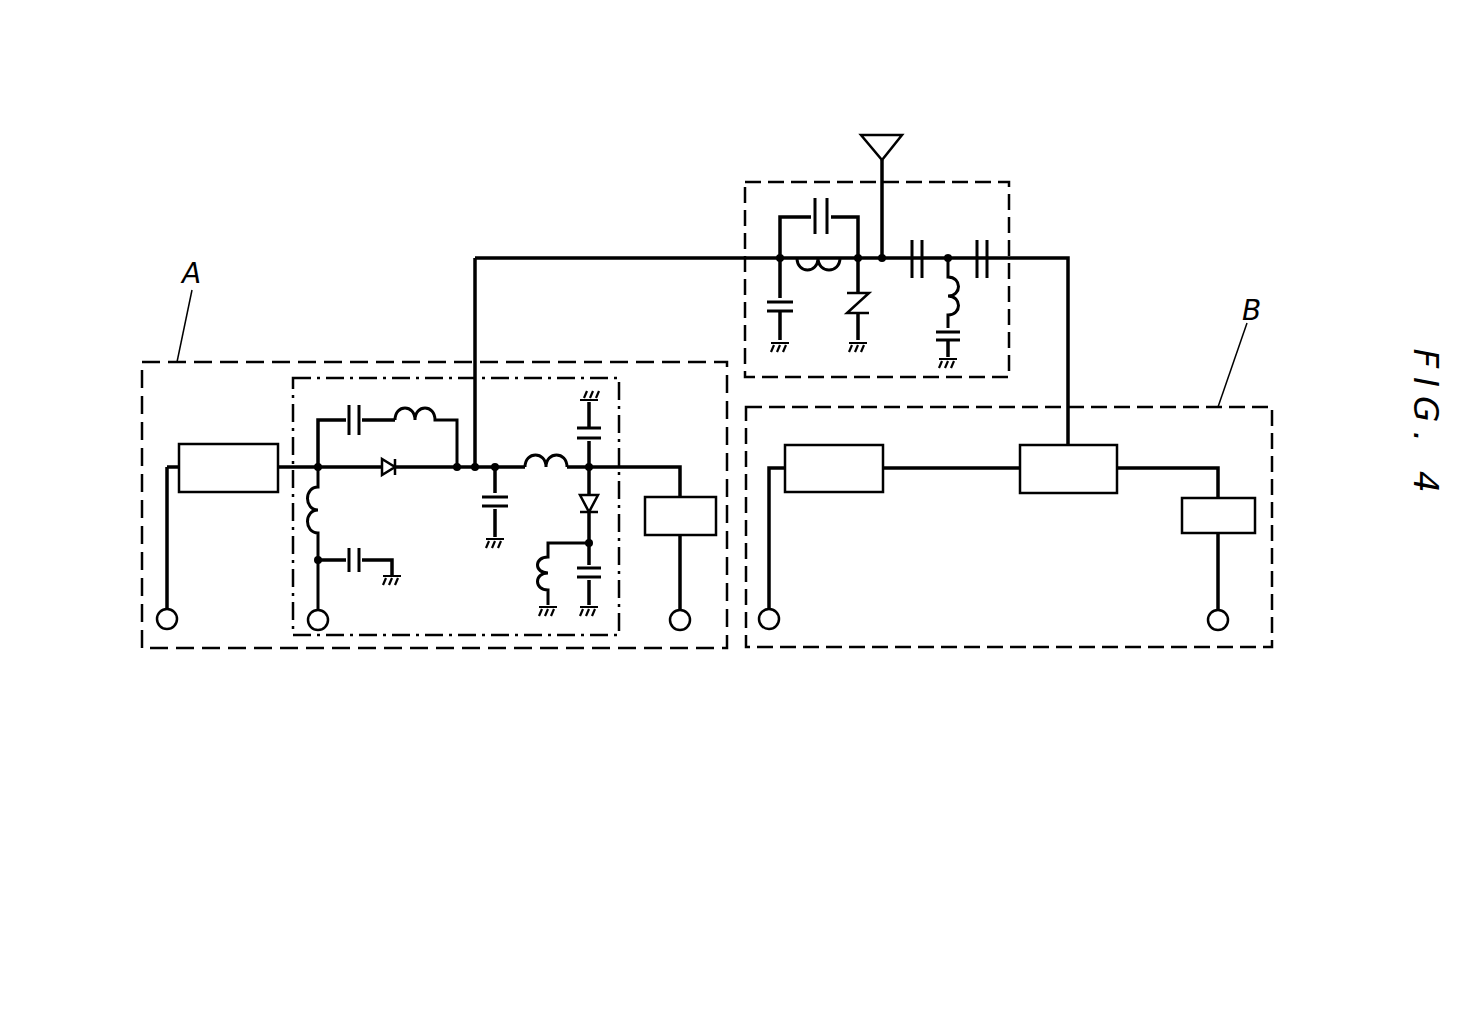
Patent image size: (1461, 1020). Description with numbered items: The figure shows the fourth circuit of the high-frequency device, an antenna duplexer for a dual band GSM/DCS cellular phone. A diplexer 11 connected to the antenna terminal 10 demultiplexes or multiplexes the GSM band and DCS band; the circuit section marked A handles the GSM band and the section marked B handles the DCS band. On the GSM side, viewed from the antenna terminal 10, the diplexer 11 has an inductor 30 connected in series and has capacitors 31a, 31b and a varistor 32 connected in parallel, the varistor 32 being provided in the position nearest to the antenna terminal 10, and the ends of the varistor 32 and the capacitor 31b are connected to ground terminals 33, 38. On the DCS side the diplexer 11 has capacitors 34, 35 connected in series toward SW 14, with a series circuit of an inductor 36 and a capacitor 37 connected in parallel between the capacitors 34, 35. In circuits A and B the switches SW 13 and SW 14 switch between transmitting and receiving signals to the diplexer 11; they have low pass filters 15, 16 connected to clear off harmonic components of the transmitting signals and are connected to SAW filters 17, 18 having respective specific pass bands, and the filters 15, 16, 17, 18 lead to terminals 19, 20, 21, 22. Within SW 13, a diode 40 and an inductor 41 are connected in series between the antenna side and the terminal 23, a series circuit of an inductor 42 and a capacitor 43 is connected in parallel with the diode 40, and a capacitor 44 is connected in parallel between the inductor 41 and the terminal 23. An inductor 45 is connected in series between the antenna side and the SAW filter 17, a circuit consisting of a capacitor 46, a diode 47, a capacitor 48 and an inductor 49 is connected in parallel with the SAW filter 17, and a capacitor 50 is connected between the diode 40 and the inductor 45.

The antenna terminal 10 is at (875, 133).
The diplexer (DIP) 11 is at (1010, 222).
The SW 13 is at (448, 377).
The SW 14 is at (1068, 493).
The low pass filter (LPF) 15 is at (228, 492).
The low pass filter (LPF) 16 is at (835, 492).
The SAW filter 17 is at (698, 535).
The SAW filter 18 is at (1200, 535).
The terminal 19 is at (160, 628).
The terminal 20 is at (686, 629).
The terminal 21 is at (774, 628).
The terminal 22 is at (1223, 630).
The terminal 23 is at (316, 631).
The inductor 30 is at (845, 340).
The capacitor 31a is at (822, 200).
The capacitor 31b is at (768, 302).
The varistor 32 is at (862, 293).
The ground terminal 33 is at (800, 237).
The capacitor 34 is at (918, 235).
The capacitor 35 is at (983, 235).
The inductor 36 is at (958, 290).
The capacitor 37 is at (960, 335).
The ground terminal 38 is at (765, 338).
The diode 40 is at (388, 457).
The inductor 41 is at (305, 530).
The inductor 42 is at (413, 405).
The capacitor 43 is at (347, 412).
The capacitor 44 is at (356, 572).
The inductor 45 is at (537, 450).
The capacitor 46 is at (577, 410).
The diode 47 is at (593, 505).
The capacitor 48 is at (575, 583).
The inductor 49 is at (540, 580).
The capacitor 50 is at (485, 510).